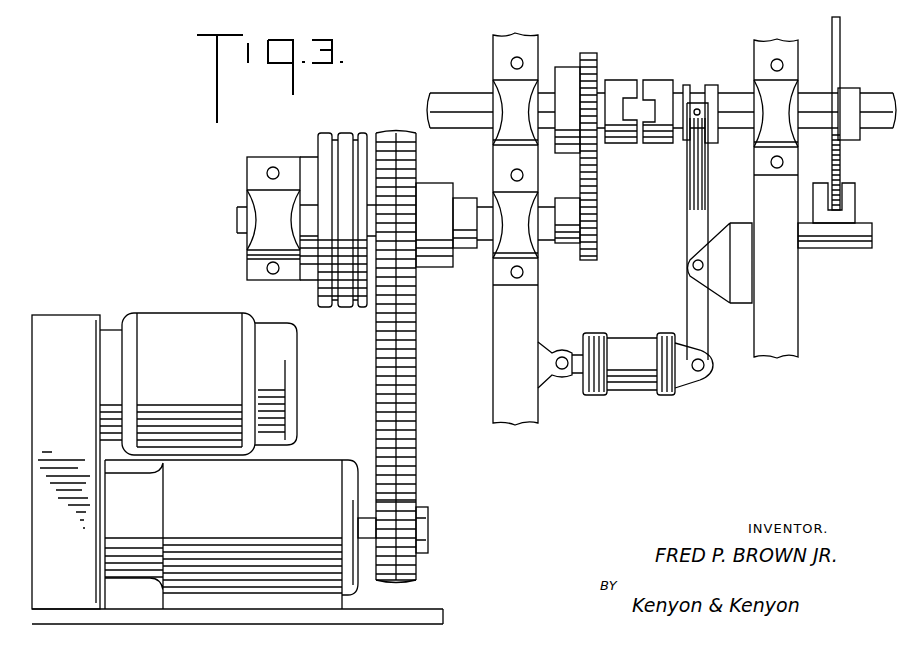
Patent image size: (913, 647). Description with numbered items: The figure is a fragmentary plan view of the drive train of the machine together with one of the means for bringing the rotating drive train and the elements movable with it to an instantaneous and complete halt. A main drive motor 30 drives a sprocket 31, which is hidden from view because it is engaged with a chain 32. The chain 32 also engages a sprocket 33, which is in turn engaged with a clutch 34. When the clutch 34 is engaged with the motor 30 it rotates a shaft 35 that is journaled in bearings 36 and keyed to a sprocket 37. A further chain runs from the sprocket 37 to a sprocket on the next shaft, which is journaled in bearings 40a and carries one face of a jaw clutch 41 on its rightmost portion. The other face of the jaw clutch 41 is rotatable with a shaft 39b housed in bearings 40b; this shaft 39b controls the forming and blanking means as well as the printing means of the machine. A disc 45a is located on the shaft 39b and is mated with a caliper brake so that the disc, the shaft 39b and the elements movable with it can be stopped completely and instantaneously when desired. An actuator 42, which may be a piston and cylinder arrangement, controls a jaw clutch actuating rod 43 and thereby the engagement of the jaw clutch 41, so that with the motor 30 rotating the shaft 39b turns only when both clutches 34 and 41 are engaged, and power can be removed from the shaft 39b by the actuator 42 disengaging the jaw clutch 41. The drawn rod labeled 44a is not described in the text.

The main drive motor 30 is at (320, 444).
The sprocket 31 is at (418, 572).
The chain 32 is at (412, 402).
The sprocket 33 is at (418, 145).
The clutch 34 is at (346, 143).
The shaft 35 is at (243, 213).
The bearings 36 is at (250, 248).
The sprocket 37 is at (603, 233).
The shaft 39b is at (877, 130).
The bearings 40a is at (535, 65).
The bearings 40b is at (760, 60).
The jaw clutch 41 is at (680, 73).
The actuator 42 is at (630, 345).
The jaw clutch actuating rod 43 is at (695, 197).
The actuating rod 44a is at (840, 52).
The disc 45a is at (840, 243).